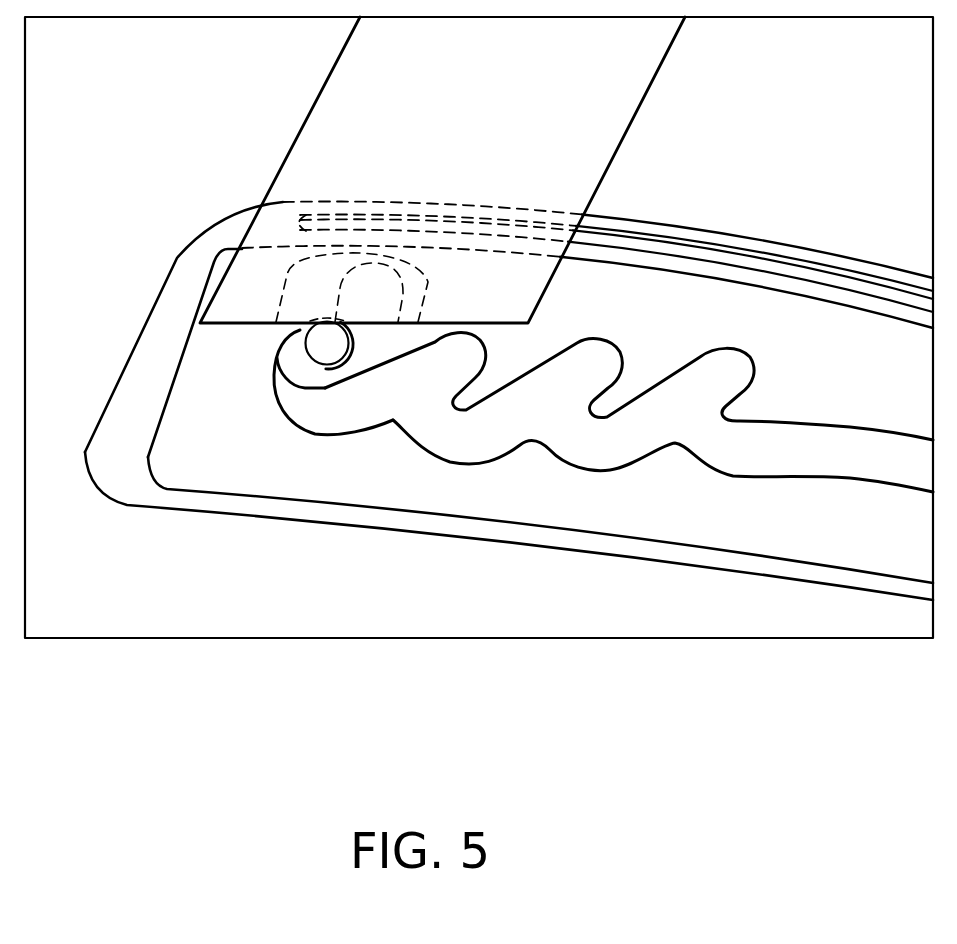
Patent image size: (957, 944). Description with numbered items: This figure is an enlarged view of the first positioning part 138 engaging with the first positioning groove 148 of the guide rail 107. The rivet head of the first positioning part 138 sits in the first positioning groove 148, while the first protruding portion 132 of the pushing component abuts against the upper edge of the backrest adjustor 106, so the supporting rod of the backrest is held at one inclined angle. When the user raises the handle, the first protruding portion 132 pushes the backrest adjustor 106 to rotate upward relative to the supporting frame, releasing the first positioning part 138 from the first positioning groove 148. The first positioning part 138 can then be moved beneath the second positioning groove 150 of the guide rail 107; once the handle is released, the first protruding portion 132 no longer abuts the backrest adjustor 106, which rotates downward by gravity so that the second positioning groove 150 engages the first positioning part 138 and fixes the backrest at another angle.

The backrest adjustor 106 is at (633, 237).
The guide rail 107 is at (540, 556).
The first protruding portion 132 is at (283, 300).
The first positioning part 138 is at (330, 343).
The first positioning groove 148 is at (308, 395).
The second positioning groove 150 is at (695, 412).